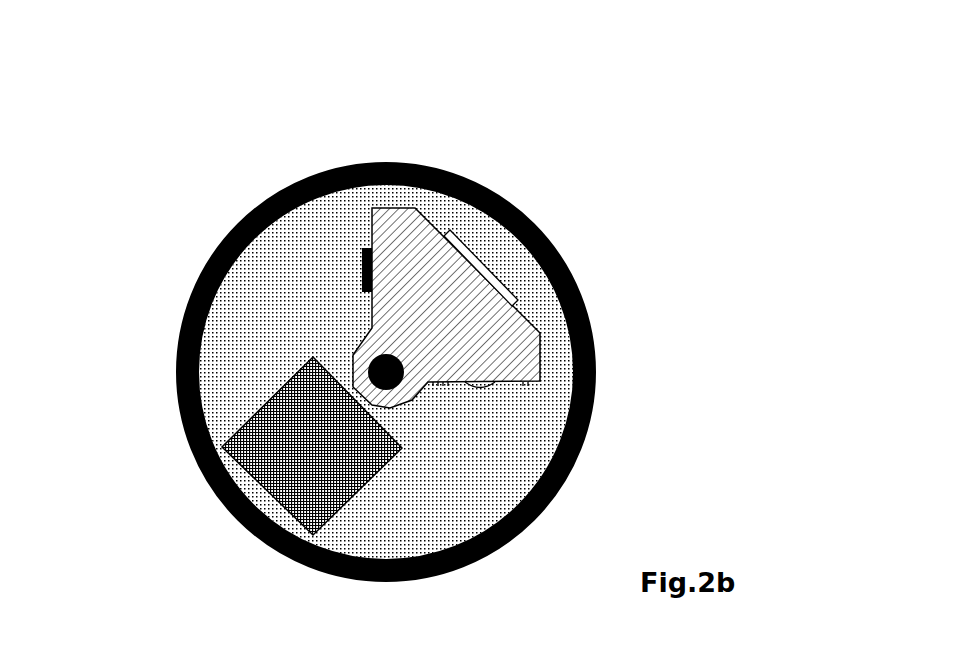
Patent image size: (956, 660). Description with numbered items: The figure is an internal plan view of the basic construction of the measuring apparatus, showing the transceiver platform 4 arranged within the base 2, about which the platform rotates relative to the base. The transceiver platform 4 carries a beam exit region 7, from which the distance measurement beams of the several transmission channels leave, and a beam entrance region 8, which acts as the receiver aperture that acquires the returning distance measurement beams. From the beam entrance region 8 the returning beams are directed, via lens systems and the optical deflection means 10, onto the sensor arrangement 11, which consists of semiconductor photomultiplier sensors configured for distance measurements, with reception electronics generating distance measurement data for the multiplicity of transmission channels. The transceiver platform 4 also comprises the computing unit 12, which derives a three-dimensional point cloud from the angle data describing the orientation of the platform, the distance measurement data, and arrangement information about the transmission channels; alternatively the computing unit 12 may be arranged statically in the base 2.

The base 2 is at (238, 525).
The transceiver platform 4 is at (505, 167).
The beam exit region 7 is at (525, 383).
The beam entrance region 8 is at (540, 353).
The optical deflection means 10 is at (488, 268).
The sensor arrangement 11 is at (363, 273).
The computing unit 12 is at (257, 432).